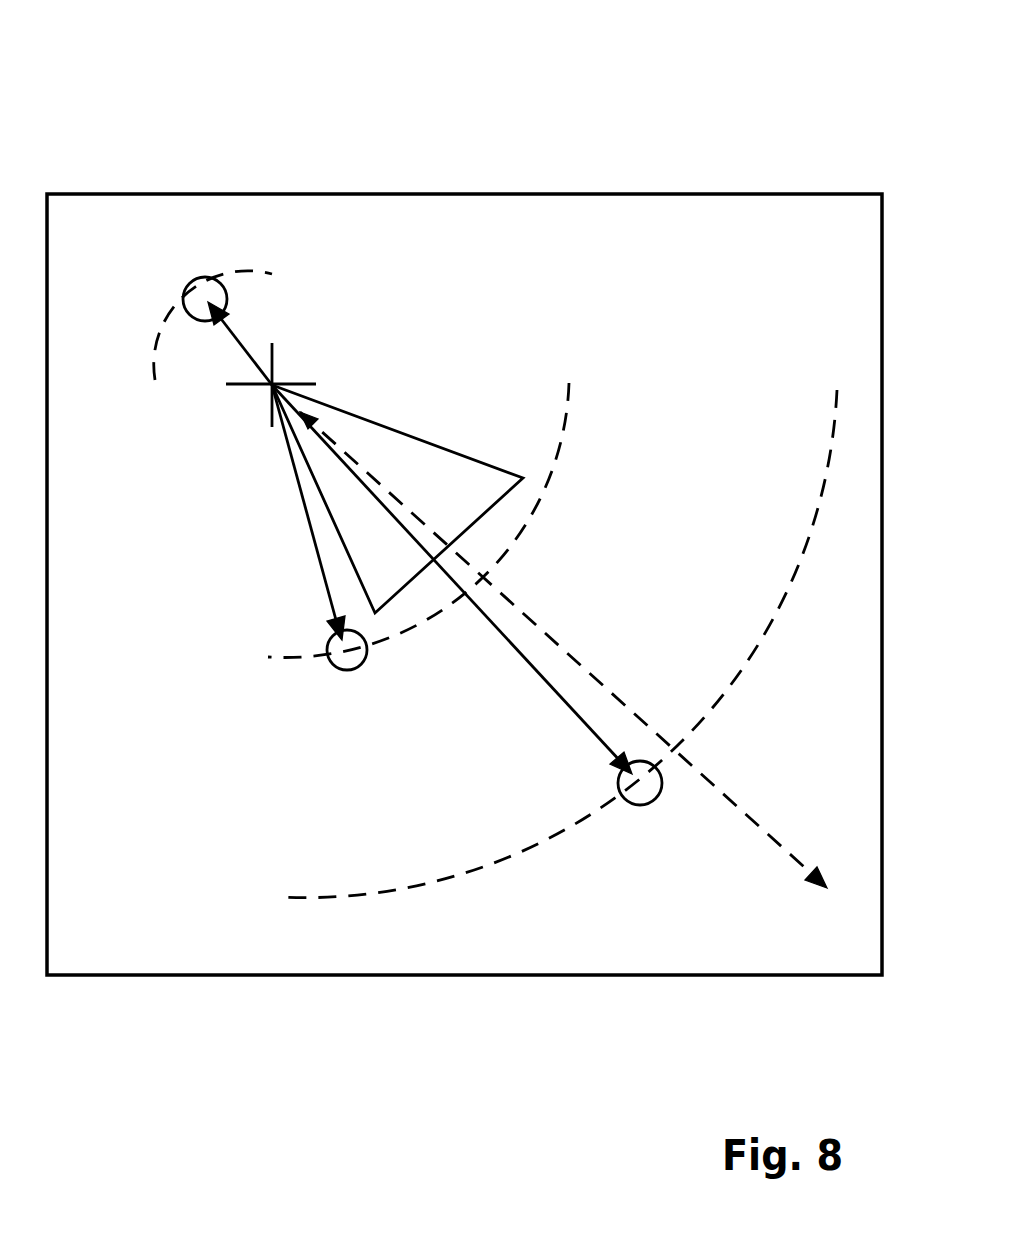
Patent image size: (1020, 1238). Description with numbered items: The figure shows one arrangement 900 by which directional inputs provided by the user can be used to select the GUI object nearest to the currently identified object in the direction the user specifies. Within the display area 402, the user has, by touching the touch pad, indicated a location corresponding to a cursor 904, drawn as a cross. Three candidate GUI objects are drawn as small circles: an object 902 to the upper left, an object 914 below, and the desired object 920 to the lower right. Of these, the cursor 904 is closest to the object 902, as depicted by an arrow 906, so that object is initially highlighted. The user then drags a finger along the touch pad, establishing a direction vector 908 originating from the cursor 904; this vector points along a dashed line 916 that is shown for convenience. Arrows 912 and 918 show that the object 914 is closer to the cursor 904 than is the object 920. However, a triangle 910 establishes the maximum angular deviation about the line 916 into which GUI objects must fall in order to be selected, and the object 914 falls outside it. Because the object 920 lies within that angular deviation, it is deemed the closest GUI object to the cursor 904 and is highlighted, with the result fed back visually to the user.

The arrangement 900 is at (774, 58).
The display area 402 is at (505, 1000).
The object 902 is at (203, 277).
The cursor 904 is at (252, 388).
The arrow 906 is at (233, 338).
The direction vector 908 is at (308, 412).
The triangle 910 is at (415, 432).
The arrow 912 is at (313, 547).
The object 914 is at (345, 671).
The dashed line 916 is at (527, 617).
The arrow 918 is at (525, 656).
The object 920 is at (648, 805).